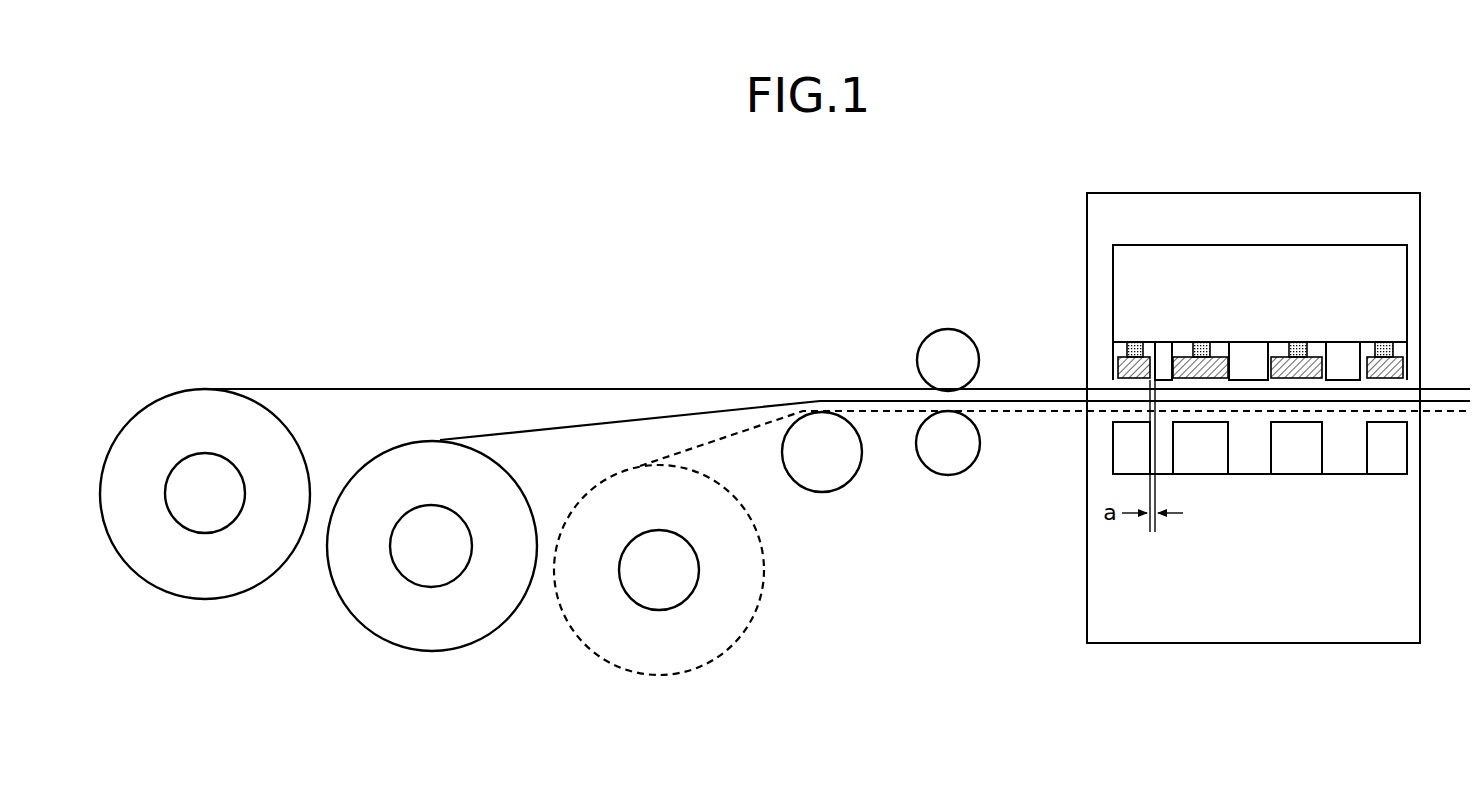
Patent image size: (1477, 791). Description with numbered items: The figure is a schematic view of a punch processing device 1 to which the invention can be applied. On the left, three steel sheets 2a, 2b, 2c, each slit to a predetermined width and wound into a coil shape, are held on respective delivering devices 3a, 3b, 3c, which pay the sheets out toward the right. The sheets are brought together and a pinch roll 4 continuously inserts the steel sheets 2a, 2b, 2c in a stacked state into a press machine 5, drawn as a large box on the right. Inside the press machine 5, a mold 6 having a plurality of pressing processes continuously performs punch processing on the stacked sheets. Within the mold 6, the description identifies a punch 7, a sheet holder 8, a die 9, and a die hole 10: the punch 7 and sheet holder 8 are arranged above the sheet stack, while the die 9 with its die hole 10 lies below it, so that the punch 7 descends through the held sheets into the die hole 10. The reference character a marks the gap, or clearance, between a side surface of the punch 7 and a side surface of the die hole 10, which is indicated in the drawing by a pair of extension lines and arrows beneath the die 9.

The punch processing device 1 is at (809, 240).
The steel sheet 2a is at (205, 600).
The steel sheet 2b is at (432, 652).
The steel sheet 2c is at (659, 675).
The delivering device 3a is at (205, 533).
The delivering device 3b is at (431, 587).
The delivering device 3c is at (659, 610).
The pinch roll 4 is at (948, 328).
The press machine 5 is at (1393, 643).
The mold 6 is at (1408, 283).
The punch 7 is at (1343, 358).
The sheet holder 8 is at (1400, 363).
The die 9 is at (1298, 475).
The die hole 10 is at (1250, 455).